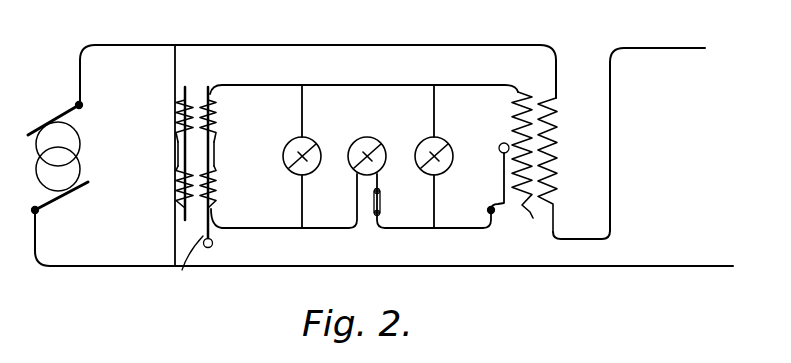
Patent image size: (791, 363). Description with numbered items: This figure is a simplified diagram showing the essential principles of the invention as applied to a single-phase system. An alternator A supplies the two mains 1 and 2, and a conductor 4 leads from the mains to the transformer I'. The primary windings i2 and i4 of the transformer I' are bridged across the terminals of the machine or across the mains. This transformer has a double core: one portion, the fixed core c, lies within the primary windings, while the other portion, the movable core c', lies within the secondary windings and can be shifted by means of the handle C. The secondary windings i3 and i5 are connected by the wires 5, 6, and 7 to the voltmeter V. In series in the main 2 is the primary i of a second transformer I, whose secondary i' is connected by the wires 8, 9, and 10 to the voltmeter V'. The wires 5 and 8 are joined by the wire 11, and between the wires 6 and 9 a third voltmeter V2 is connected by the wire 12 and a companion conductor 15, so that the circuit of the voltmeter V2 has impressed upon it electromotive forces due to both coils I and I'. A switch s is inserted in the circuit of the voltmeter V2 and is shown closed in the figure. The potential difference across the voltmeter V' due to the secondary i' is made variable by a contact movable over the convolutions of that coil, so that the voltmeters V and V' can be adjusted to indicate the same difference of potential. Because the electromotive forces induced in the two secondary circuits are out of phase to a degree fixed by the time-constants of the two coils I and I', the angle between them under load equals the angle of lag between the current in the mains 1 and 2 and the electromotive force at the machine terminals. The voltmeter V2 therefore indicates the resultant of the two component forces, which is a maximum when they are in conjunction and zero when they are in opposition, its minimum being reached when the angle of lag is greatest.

The main 1 is at (125, 268).
The main 2 is at (392, 126).
The conductor to transformer 4 is at (189, 58).
The wire 5 is at (275, 84).
The wire 6 is at (263, 230).
The wire 7 is at (299, 121).
The wire 8 is at (486, 84).
The wire 9 is at (452, 231).
The wire 10 is at (431, 120).
The wire 11 is at (360, 84).
The wire 12 is at (327, 230).
The conductor with fuse 15 is at (404, 219).
The alternator A is at (66, 158).
The handle C is at (208, 261).
The fixed core portion c is at (197, 234).
The movable core portion c' is at (187, 269).
The transformer I is at (505, 135).
The transformer I' is at (195, 153).
The primary winding i is at (551, 165).
The secondary winding i' is at (508, 155).
The primary winding i2 is at (180, 115).
The secondary winding i3 is at (218, 121).
The primary winding i4 is at (177, 192).
The secondary winding i5 is at (218, 188).
The voltmeter V is at (305, 166).
The voltmeter V2 is at (378, 164).
The voltmeter V' is at (440, 166).
The switch s is at (385, 198).